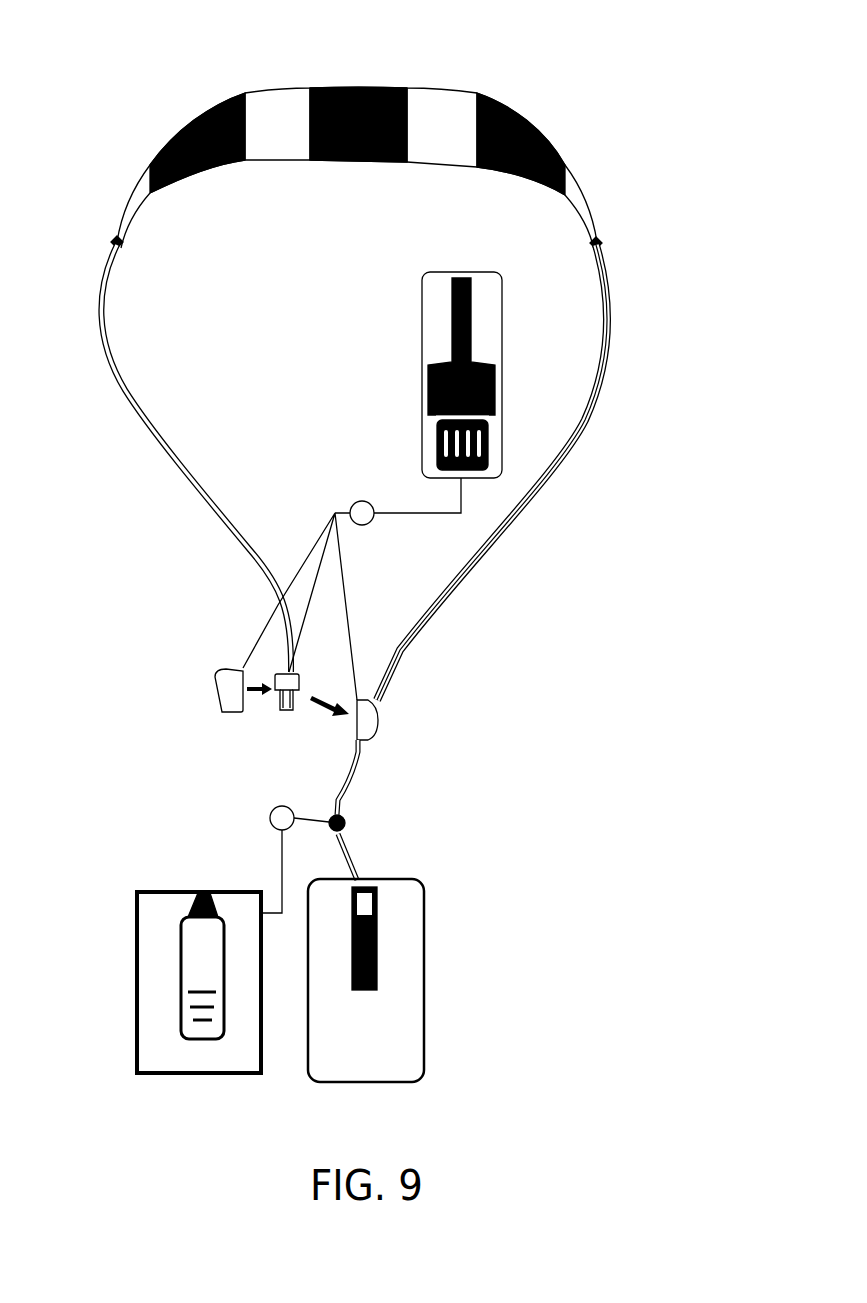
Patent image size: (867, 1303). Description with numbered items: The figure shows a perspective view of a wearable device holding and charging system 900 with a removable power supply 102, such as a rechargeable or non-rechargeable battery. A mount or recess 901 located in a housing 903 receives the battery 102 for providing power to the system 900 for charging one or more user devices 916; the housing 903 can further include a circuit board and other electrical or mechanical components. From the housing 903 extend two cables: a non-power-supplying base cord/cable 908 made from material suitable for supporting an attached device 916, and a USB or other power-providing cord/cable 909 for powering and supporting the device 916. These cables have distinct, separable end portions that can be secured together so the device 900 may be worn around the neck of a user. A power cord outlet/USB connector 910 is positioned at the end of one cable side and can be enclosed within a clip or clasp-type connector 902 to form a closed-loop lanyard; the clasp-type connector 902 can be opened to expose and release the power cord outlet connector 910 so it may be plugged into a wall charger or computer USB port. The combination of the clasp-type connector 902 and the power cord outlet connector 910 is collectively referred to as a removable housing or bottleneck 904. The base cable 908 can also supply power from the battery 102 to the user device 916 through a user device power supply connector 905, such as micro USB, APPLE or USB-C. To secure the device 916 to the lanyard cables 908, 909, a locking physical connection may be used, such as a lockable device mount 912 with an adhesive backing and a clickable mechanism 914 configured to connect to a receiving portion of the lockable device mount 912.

The wearable device holding and charging system 900 is at (97, 26).
The removable power supply 102 is at (305, 135).
The mount or recess 901 is at (358, 90).
The housing 903 is at (543, 133).
The base cord/cable 908 is at (613, 338).
The power providing cord/cable 909 is at (143, 413).
The removable housing or bottleneck 904 is at (356, 503).
The power cord outlet/USB connector 910 is at (445, 272).
The clasp-type connector 902 is at (213, 670).
The user device power supply connector 905 is at (270, 822).
The lockable device mount 912 is at (378, 932).
The clickable mechanism 914 is at (200, 1040).
The user device 916 is at (387, 1030).